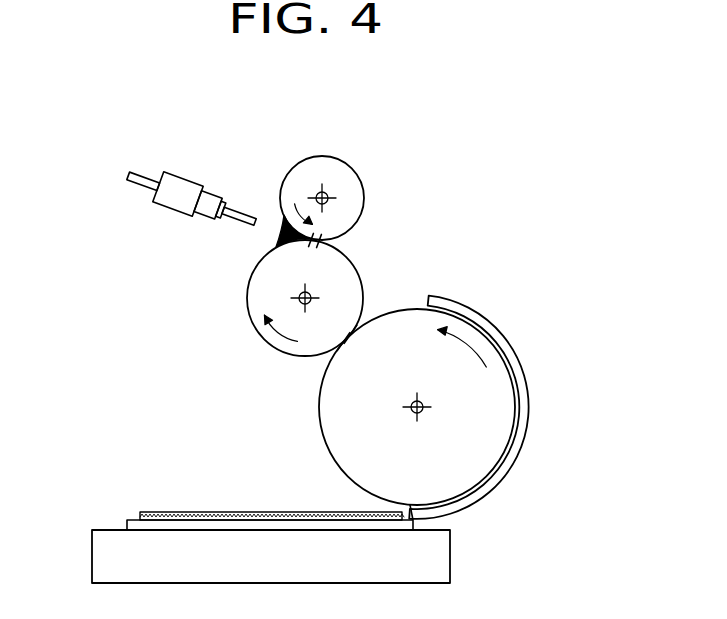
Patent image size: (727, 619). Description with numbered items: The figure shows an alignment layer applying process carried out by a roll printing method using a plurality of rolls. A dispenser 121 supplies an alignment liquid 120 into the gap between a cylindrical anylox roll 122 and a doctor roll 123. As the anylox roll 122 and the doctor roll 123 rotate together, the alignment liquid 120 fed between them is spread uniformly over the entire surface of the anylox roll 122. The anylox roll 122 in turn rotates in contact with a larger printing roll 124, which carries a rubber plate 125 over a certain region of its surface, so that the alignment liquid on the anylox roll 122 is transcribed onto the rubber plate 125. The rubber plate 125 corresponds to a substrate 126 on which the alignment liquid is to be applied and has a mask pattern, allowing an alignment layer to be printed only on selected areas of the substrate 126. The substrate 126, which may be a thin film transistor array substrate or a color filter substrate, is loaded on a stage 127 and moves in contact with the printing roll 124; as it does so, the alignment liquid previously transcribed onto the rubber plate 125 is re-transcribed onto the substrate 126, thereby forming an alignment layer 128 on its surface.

The alignment liquid 120 is at (275, 222).
The dispenser 121 is at (178, 172).
The anylox roll 122 is at (254, 318).
The doctor roll 123 is at (336, 165).
The printing roll 124 is at (333, 445).
The rubber plate 125 is at (528, 388).
The substrate 126 is at (130, 522).
The stage 127 is at (92, 555).
The alignment layer 128 is at (190, 512).